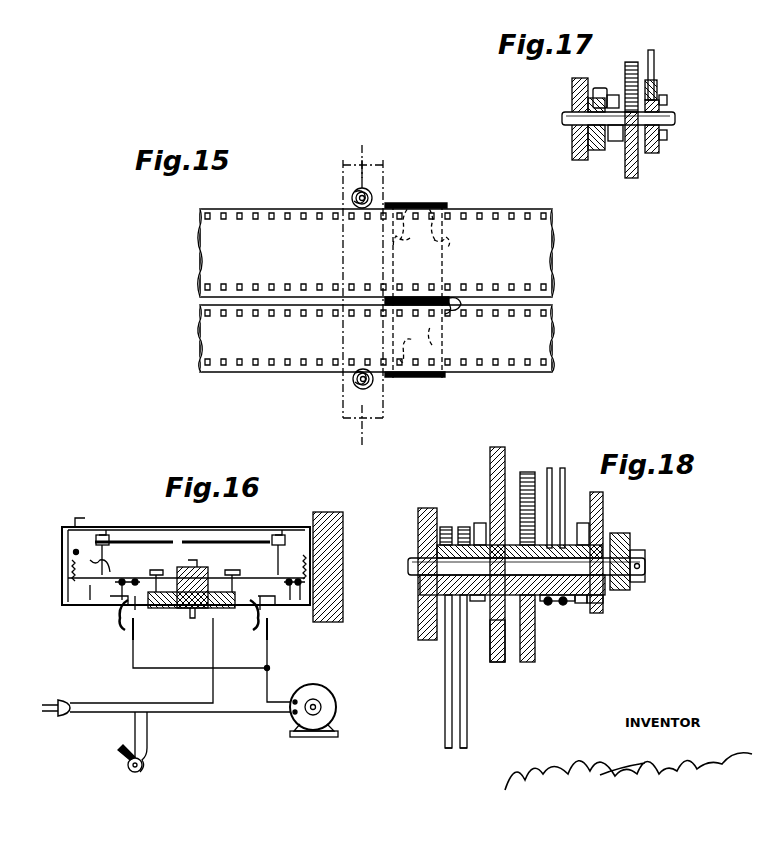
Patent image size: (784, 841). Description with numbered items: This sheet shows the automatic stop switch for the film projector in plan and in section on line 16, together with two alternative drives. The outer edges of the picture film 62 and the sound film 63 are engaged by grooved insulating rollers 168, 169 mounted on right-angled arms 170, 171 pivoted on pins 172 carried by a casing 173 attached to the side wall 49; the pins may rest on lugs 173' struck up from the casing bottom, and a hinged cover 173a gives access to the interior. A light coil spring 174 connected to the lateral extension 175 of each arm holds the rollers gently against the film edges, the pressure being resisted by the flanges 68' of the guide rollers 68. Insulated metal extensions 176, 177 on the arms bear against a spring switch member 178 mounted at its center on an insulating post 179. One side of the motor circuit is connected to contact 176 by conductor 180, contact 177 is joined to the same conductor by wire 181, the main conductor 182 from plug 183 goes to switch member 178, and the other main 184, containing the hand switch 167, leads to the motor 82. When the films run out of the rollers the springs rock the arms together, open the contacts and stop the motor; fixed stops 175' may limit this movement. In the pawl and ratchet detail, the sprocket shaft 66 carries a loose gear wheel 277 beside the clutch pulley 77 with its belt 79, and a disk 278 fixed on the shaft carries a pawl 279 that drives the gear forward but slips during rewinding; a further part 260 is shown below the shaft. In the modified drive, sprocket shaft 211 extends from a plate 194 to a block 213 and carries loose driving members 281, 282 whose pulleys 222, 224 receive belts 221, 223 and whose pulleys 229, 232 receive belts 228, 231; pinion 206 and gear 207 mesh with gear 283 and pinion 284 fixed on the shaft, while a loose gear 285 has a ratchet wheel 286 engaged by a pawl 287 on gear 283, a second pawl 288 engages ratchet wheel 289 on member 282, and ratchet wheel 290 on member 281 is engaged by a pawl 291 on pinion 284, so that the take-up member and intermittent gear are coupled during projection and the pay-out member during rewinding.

In FIG. 15, the section line 16 is at (362, 172).
In FIG. 17, the side wall 49 is at (572, 93).
In FIG. 16, the side wall 49 is at (327, 512).
In FIG. 15, the picture film 62 is at (212, 253).
In FIG. 16, the picture film 62 is at (222, 542).
In FIG. 15, the sound film 63 is at (212, 332).
In FIG. 16, the sound film 63 is at (135, 542).
In FIG. 17, the sprocket shaft 66 is at (674, 116).
In FIG. 15, the guide rollers 68 is at (422, 290).
In FIG. 15, the flanges of guide rollers 68' is at (438, 301).
In FIG. 17, the clutch pulley 77 is at (660, 158).
In FIG. 17, the driving belt 79 is at (652, 61).
In FIG. 16, the motor 82 is at (335, 717).
In FIG. 16, the hand switch 167 is at (128, 768).
In FIG. 15, the grooved roller 168 is at (351, 193).
In FIG. 16, the grooved roller 168 is at (279, 535).
In FIG. 15, the grooved roller 169 is at (353, 382).
In FIG. 16, the grooved roller 169 is at (101, 536).
In FIG. 16, the right-angled arm 170 is at (292, 573).
In FIG. 16, the right-angled arm 171 is at (82, 552).
In FIG. 16, the pivot pins 172 is at (108, 586).
In FIG. 15, the frame or casing 173 is at (365, 158).
In FIG. 16, the frame or casing 173 is at (164, 578).
In FIG. 16, the hinged cover 173a is at (72, 520).
In FIG. 16, the lugs 173' is at (174, 633).
In FIG. 16, the coil spring 174 is at (70, 568).
In FIG. 16, the lateral extension 175 is at (205, 591).
In FIG. 16, the fixed stops 175' is at (204, 628).
In FIG. 16, the insulated metal extension 176 is at (237, 570).
In FIG. 16, the insulated metal extension 177 is at (148, 570).
In FIG. 16, the switch member 178 is at (215, 560).
In FIG. 16, the insulating post 179 is at (170, 608).
In FIG. 16, the conductor 180 is at (267, 672).
In FIG. 16, the wire 181 is at (133, 661).
In FIG. 16, the main circuit conductor 182 is at (213, 692).
In FIG. 16, the plug 183 is at (65, 698).
In FIG. 16, the circuit main 184 is at (175, 716).
In FIG. 18, the plate 194 is at (420, 517).
In FIG. 18, the pinion 206 is at (490, 448).
In FIG. 18, the gear 207 is at (603, 500).
In FIG. 18, the sprocket shaft 211 is at (645, 568).
In FIG. 18, the bearing block 213 is at (627, 539).
In FIG. 18, the driving belt 221 is at (550, 468).
In FIG. 18, the pulley 222 is at (550, 605).
In FIG. 18, the driving belt 223 is at (563, 468).
In FIG. 18, the pulley 224 is at (574, 602).
In FIG. 18, the driving belt 228 is at (446, 705).
In FIG. 18, the pulley 229 is at (443, 516).
In FIG. 18, the driving belt 231 is at (465, 688).
In FIG. 18, the pulley 232 is at (465, 526).
In FIG. 17, the clutch block 260 is at (617, 145).
In FIG. 17, the gear wheel 277 is at (638, 178).
In FIG. 17, the disk 278 is at (596, 149).
In FIG. 17, the pawl 279 is at (612, 88).
In FIG. 18, the driving member 281 is at (565, 605).
In FIG. 18, the driving member 282 is at (440, 592).
In FIG. 18, the gear 283 is at (500, 662).
In FIG. 18, the pinion 284 is at (603, 599).
In FIG. 18, the gear 285 is at (555, 605).
In FIG. 18, the ratchet wheel 286 is at (528, 662).
In FIG. 18, the pawl 287 is at (525, 506).
In FIG. 18, the pawl 288 is at (480, 522).
In FIG. 18, the ratchet wheel 289 is at (478, 600).
In FIG. 18, the ratchet wheel 290 is at (596, 603).
In FIG. 18, the pawl 291 is at (583, 522).